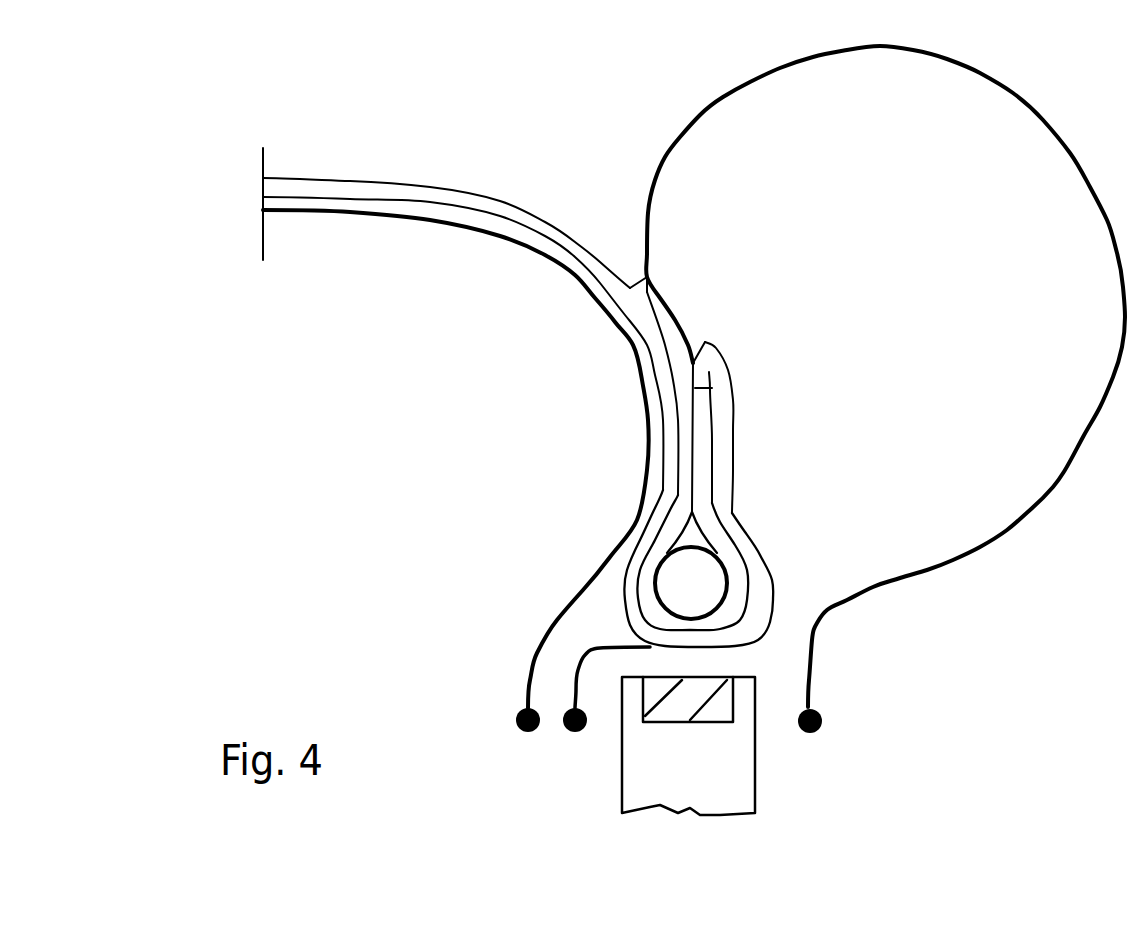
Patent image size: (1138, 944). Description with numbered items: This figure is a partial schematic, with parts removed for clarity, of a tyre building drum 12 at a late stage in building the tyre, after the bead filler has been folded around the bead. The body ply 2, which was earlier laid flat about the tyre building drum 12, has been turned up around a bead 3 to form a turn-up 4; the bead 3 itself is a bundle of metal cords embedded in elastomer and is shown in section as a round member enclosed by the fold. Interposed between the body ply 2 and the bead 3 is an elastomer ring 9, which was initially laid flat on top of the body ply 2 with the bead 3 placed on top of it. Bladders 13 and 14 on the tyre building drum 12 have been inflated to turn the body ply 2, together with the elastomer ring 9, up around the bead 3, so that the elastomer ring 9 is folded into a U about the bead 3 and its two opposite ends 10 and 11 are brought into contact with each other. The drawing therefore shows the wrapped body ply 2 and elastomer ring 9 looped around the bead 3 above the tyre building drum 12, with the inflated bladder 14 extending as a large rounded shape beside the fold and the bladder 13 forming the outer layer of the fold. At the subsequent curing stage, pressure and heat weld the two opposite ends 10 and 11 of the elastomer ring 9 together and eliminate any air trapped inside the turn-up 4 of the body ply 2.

The body ply 2 is at (540, 228).
The bead 3 is at (691, 583).
The turn-up 4 is at (612, 465).
The elastomer ring 9 is at (657, 608).
The opposite end of elastomer ring 10 is at (643, 275).
The opposite end of elastomer ring 11 is at (697, 397).
The tyre building drum 12 is at (540, 790).
The bladder 13 is at (387, 218).
The bladder 14 is at (910, 52).